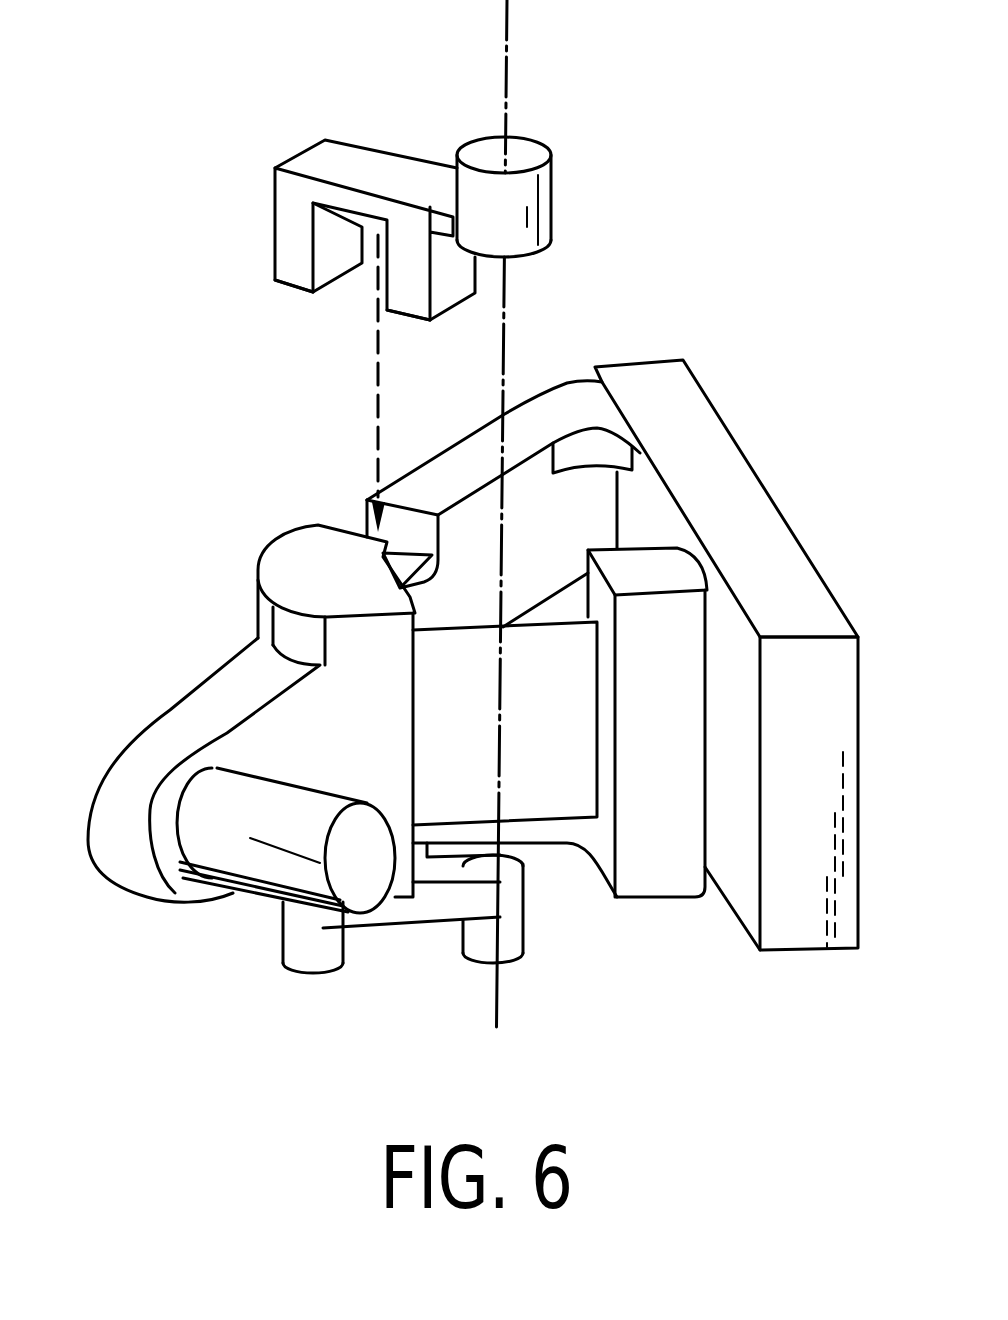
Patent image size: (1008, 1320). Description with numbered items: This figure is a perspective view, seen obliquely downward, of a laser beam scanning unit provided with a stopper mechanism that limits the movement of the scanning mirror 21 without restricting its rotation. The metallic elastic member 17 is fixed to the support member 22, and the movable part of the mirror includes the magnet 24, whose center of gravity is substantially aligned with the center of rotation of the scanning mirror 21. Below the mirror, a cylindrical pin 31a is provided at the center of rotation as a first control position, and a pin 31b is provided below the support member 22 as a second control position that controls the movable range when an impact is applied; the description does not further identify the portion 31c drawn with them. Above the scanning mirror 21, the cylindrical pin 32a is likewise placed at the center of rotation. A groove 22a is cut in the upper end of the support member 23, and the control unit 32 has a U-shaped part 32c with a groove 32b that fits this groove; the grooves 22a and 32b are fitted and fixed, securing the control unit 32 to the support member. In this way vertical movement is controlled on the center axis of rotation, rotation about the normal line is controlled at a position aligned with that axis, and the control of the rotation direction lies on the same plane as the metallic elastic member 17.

The metallic elastic member 17 is at (567, 843).
The scanning mirror 21 is at (740, 483).
The support member 22 is at (448, 465).
The groove 22a is at (348, 517).
The support member 23 is at (208, 700).
The magnet 24 is at (283, 807).
The cylindrical pin 31a is at (508, 943).
The pin 31b is at (302, 953).
The connecting plate 31c is at (425, 908).
The control unit 32 is at (338, 157).
The cylindrical pin 32a is at (532, 152).
The groove 32b is at (348, 288).
The U-shaped part 32c is at (430, 180).